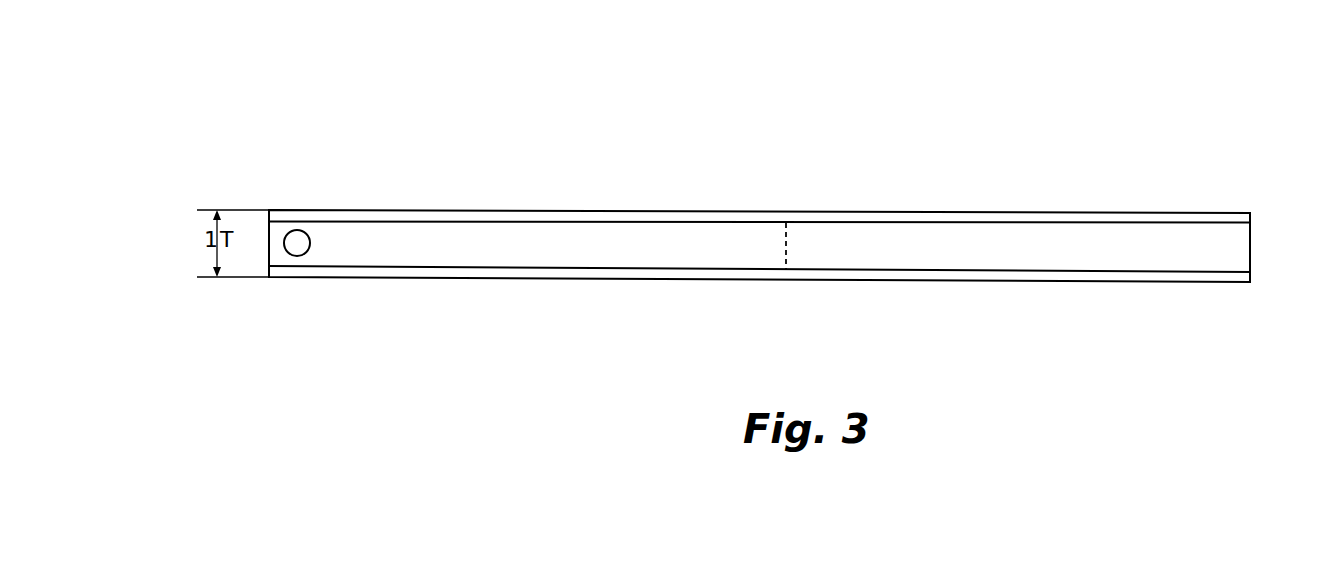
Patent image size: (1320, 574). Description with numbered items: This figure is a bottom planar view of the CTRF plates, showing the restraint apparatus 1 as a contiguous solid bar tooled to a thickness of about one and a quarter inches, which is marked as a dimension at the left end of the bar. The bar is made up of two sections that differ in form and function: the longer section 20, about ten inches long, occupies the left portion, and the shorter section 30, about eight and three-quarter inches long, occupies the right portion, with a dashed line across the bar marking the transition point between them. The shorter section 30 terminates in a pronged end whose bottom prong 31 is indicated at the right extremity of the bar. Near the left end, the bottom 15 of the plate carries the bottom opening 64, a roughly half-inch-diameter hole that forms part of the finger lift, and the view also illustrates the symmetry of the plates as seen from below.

The restraint apparatus 1 is at (242, 108).
The bottom 15 is at (373, 243).
The longer section 20 is at (690, 246).
The shorter section 30 is at (903, 246).
The bottom prong 31 is at (1254, 240).
The bottom opening 64 is at (300, 224).